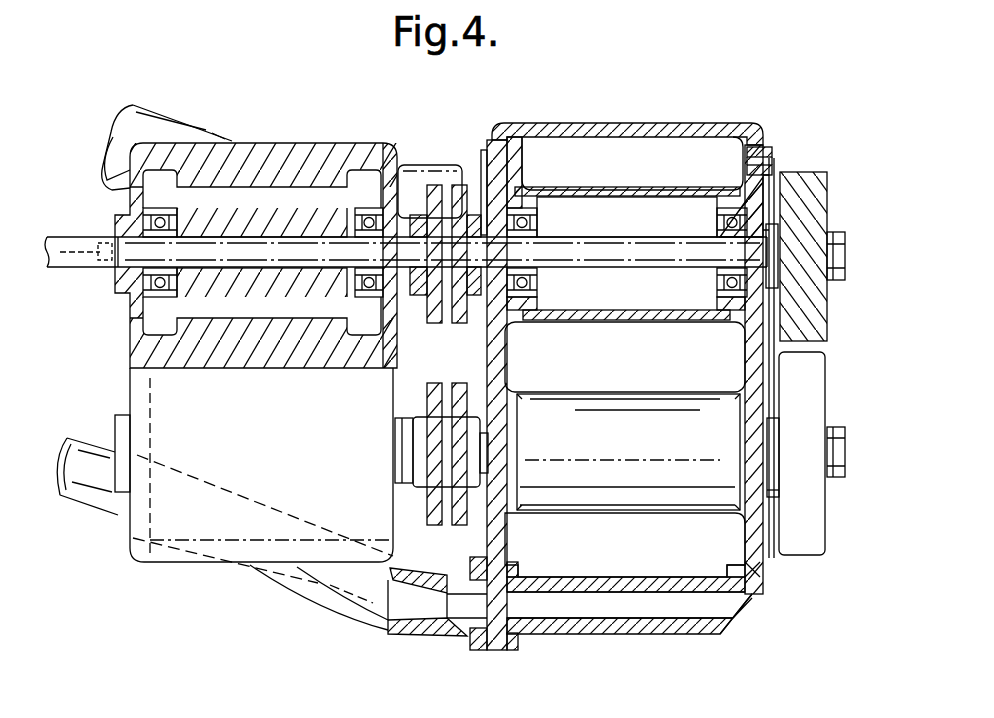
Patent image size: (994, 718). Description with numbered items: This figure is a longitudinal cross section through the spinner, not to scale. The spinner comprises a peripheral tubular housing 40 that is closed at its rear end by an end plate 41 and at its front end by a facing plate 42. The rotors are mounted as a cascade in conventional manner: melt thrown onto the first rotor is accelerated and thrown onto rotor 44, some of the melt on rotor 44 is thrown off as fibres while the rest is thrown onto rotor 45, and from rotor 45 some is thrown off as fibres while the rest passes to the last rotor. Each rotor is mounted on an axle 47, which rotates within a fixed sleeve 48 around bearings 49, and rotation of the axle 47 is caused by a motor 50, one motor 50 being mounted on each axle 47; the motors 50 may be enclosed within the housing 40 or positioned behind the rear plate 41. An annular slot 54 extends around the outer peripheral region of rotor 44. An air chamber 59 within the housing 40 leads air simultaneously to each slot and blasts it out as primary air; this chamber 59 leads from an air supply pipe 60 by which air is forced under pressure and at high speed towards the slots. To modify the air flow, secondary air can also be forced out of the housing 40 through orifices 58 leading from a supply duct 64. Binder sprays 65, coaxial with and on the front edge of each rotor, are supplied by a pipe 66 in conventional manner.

The peripheral tubular housing 40 is at (666, 123).
The end plate 41 is at (492, 518).
The facing plate 42 is at (759, 576).
The rotor 44 is at (827, 198).
The rotor 45 is at (818, 385).
The axle 47 is at (626, 250).
The fixed sleeve 48 is at (653, 191).
The bearings 49 is at (540, 223).
The motor 50 is at (305, 143).
The annular slot 54 is at (772, 150).
The orifices 58 is at (745, 609).
The air chamber 59 is at (575, 160).
The air supply pipe 60 is at (152, 112).
The supply duct 64 is at (412, 608).
The binder sprays 65 is at (845, 255).
The pipe 66 is at (69, 266).